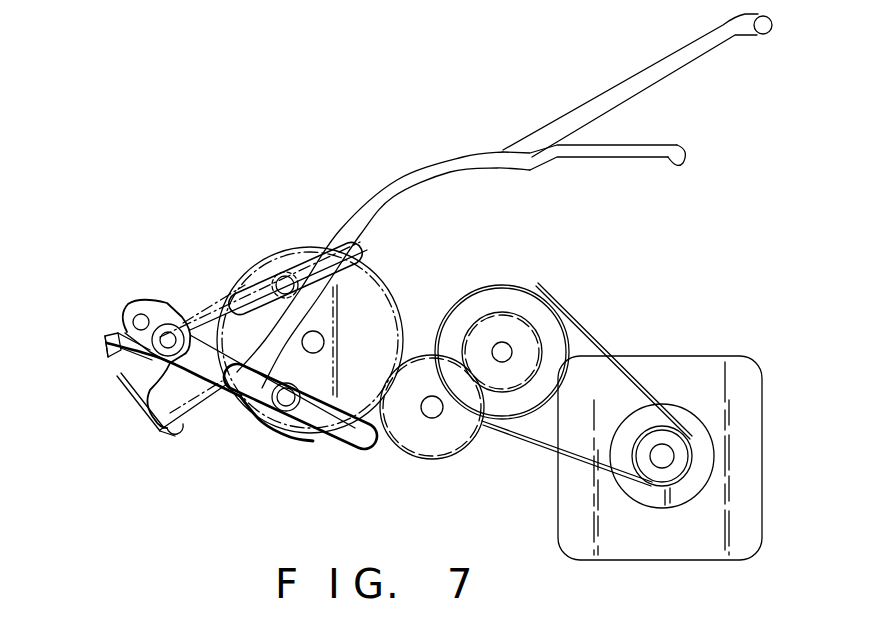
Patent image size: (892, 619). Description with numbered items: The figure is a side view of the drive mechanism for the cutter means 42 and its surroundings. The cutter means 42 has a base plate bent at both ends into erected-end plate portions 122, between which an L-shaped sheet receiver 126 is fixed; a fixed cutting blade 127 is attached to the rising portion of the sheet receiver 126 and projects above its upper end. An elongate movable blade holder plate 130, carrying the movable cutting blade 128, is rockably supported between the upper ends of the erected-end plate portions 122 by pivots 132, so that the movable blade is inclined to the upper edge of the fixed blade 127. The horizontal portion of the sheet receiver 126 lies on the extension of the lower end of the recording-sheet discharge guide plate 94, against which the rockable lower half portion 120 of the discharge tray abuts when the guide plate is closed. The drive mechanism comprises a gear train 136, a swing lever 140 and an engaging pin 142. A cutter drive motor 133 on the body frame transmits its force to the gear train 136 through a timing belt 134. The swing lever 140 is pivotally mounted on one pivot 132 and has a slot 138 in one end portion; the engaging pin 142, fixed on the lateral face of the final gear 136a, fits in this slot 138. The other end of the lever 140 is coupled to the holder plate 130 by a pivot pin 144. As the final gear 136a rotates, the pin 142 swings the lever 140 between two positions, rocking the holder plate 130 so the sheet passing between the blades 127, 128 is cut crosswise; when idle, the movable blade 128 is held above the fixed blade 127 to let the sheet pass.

The lower half portion 120 is at (660, 62).
The recording-sheet discharge guide plate 94 is at (395, 185).
The final gear 136a is at (383, 304).
The swing lever 140 is at (332, 402).
The slot 138 is at (341, 450).
The engaging pin 142 is at (285, 412).
The movable blade holder plate 130 is at (132, 325).
The pivot pin 144 is at (141, 312).
The pivot 132 is at (175, 330).
The movable cutting blade 128 is at (105, 345).
The cutter means 42 is at (103, 367).
The fixed cutting blade 127 is at (130, 394).
The sheet receiver 126 is at (157, 426).
The erected-end plate portions 122 is at (188, 390).
The gear train 136 is at (404, 466).
The timing belt 134 is at (597, 344).
The cutter drive motor 133 is at (742, 553).